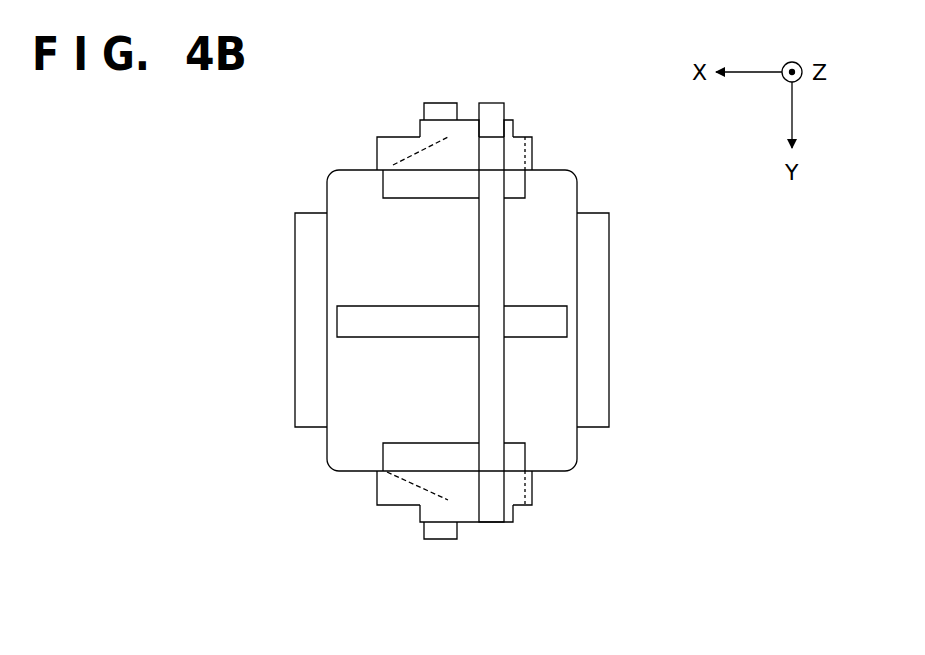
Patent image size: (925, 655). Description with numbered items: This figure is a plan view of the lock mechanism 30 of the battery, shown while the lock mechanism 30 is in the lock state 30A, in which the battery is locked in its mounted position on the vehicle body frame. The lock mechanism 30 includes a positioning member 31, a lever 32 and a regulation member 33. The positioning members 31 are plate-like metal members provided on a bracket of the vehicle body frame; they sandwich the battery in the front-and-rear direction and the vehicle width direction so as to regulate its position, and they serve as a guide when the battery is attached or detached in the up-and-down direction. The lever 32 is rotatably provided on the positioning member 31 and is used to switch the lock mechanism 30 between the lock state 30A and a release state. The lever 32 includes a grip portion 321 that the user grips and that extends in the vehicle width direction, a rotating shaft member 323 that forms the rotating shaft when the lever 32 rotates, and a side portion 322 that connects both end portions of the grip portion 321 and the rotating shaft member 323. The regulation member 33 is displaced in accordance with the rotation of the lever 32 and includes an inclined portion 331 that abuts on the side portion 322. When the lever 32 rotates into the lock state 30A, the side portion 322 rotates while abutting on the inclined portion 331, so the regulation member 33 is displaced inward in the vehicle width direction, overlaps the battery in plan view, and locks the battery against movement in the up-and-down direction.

The lock mechanism 30 is at (223, 84).
The lock state 30A is at (492, 633).
The positioning member 31 is at (377, 150).
The lever 32 is at (509, 327).
The grip portion 321 is at (505, 242).
The side portion 322 is at (467, 118).
The rotating shaft member 323 is at (438, 102).
The regulation member 33 is at (525, 183).
The inclined portion 331 is at (393, 165).